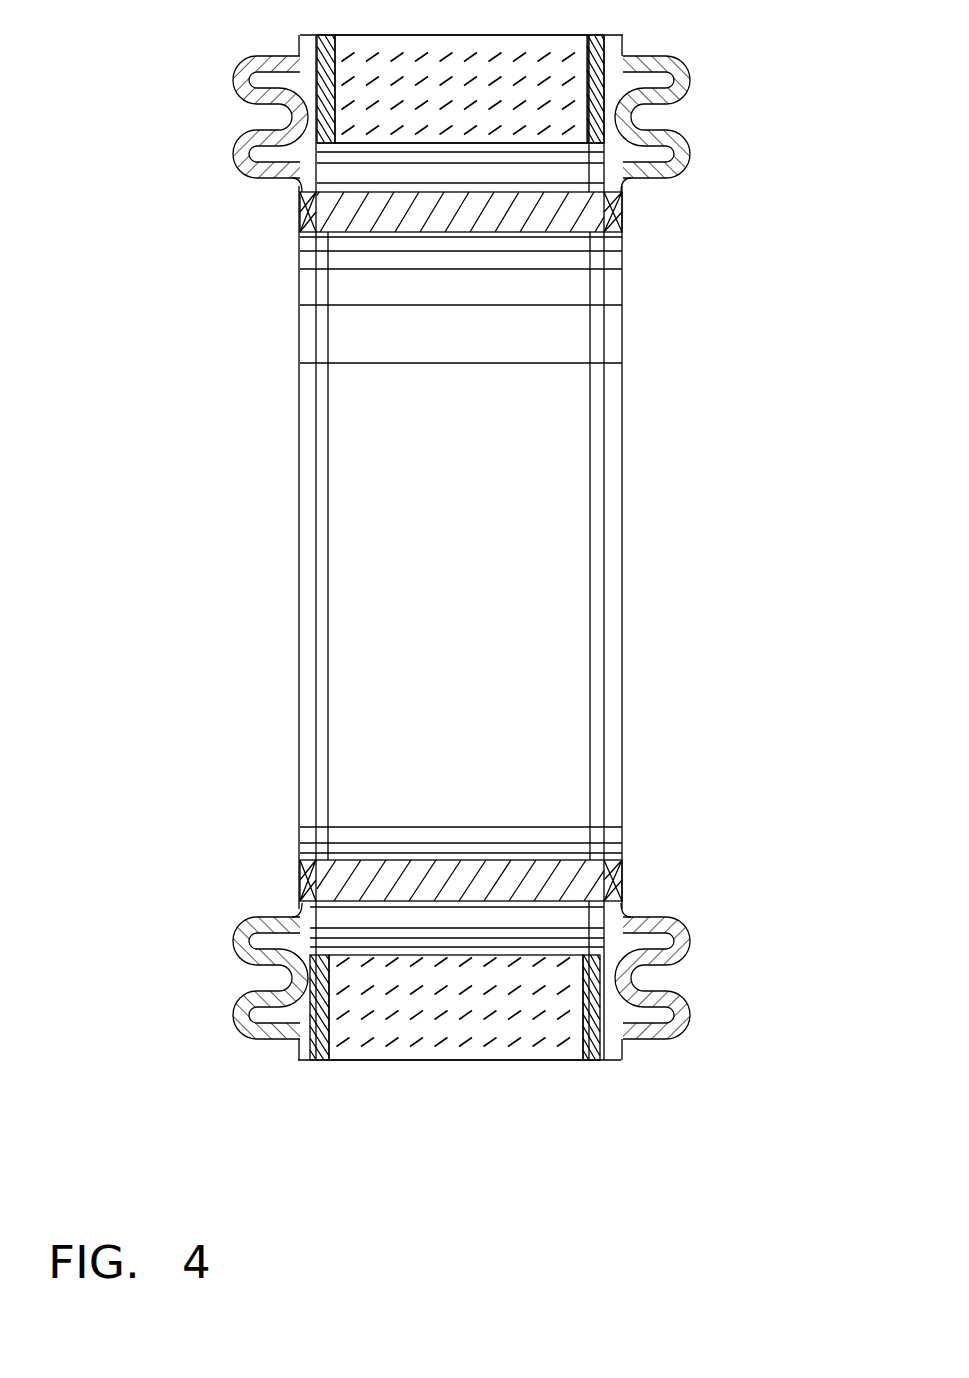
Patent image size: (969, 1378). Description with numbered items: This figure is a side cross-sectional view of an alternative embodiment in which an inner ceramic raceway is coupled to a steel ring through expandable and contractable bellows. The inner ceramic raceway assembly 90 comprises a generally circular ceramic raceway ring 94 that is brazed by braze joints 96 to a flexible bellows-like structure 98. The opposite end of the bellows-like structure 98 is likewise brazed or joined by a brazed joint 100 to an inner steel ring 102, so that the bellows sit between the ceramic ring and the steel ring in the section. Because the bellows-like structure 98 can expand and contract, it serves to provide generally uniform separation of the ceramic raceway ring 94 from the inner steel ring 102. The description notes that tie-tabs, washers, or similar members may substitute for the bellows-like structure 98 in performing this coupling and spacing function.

The inner ceramic raceway assembly 90 is at (757, 118).
The ceramic raceway ring 94 is at (456, 37).
The braze joints 96 is at (323, 37).
The bellows-like structure 98 is at (243, 72).
The brazed joint 100 is at (315, 200).
The inner steel ring 102 is at (456, 228).